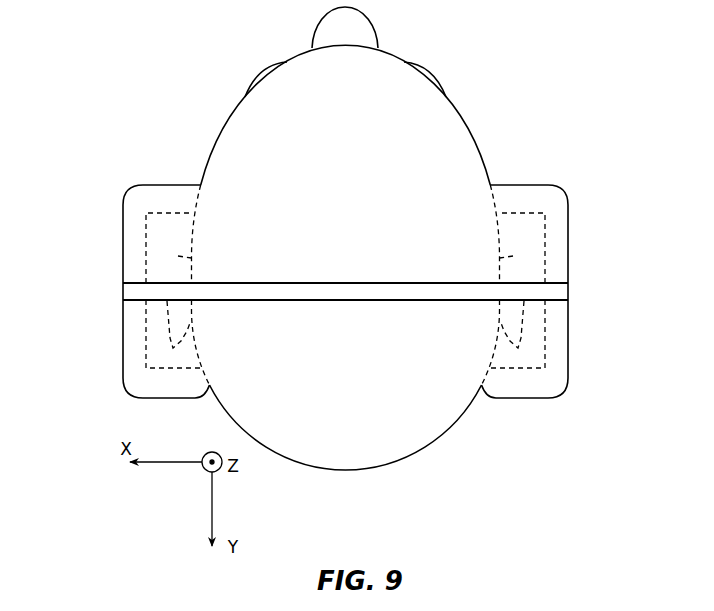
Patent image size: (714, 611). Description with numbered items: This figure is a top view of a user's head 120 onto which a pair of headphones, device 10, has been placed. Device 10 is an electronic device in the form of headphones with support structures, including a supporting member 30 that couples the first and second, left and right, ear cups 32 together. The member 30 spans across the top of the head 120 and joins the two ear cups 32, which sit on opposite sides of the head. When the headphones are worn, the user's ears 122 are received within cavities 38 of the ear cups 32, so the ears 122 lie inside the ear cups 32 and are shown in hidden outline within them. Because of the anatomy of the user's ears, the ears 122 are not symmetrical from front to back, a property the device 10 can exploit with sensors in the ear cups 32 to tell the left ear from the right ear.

The device 10 is at (80, 359).
The member 30 is at (334, 301).
The ear cups 32 is at (147, 157).
The cavities 38 is at (166, 224).
The head 120 is at (375, 470).
The ears 122 is at (178, 256).